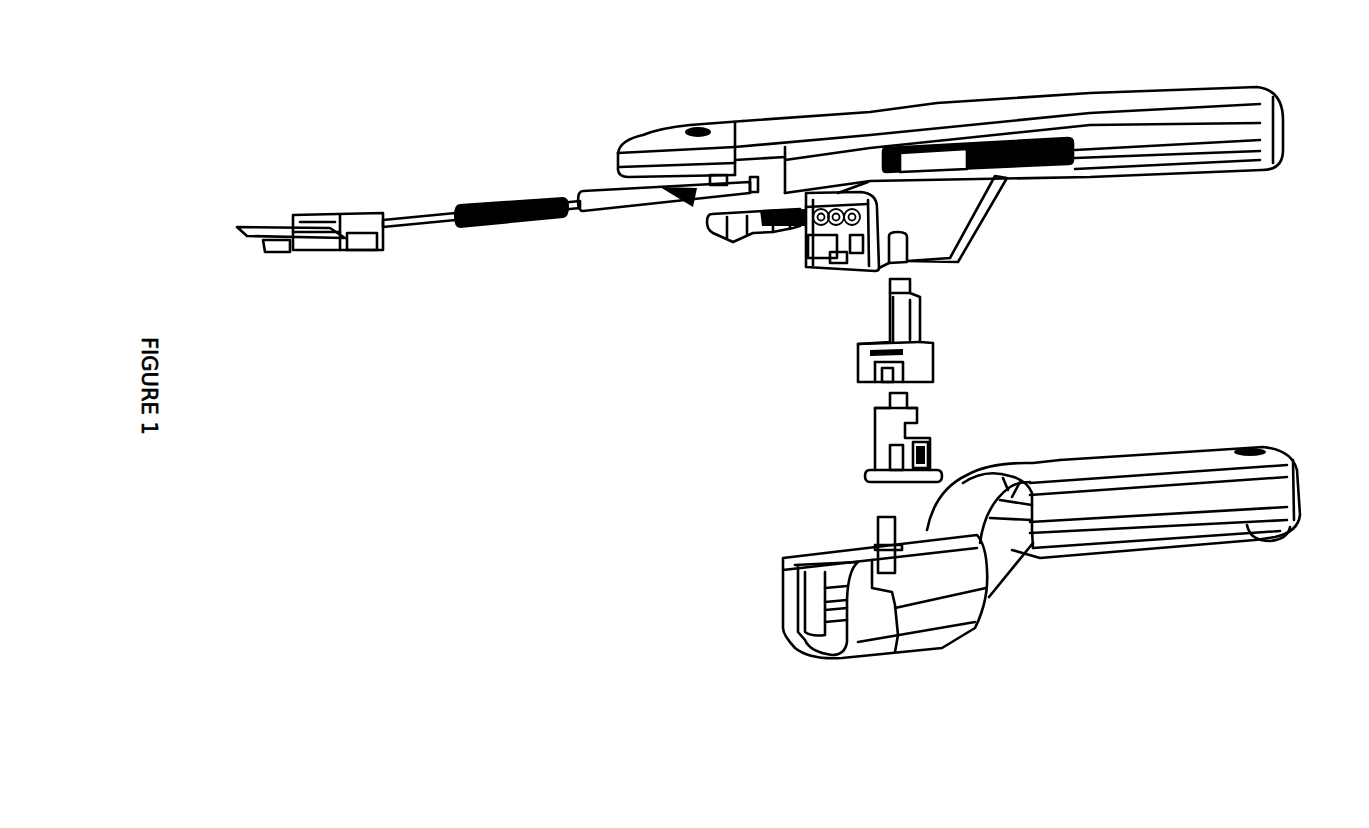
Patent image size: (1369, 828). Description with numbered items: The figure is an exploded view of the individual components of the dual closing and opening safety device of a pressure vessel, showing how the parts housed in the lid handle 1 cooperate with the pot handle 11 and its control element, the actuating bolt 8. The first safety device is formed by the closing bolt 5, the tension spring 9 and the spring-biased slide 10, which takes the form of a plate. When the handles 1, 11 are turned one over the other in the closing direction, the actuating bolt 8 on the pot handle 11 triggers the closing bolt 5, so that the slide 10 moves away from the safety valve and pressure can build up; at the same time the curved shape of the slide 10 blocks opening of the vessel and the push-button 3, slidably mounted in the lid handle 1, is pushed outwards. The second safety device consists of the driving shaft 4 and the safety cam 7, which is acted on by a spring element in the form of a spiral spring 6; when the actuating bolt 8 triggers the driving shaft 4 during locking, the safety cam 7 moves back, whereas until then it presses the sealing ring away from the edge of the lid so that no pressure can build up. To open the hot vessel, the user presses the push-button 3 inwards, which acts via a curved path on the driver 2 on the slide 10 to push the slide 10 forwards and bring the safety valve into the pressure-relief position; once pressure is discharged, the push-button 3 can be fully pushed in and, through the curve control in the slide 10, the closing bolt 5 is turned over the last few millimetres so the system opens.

The lid handle 1 is at (1160, 136).
The driver 2 is at (461, 203).
The push-button 3 is at (1028, 160).
The driving shaft 4 is at (890, 432).
The closing bolt 5 is at (922, 357).
The spiral spring 6 is at (800, 240).
The safety cam 7 is at (730, 237).
The actuating bolt 8 is at (876, 528).
The tension spring 9 is at (520, 227).
The slide 10 is at (277, 251).
The pot handle 11 is at (945, 590).